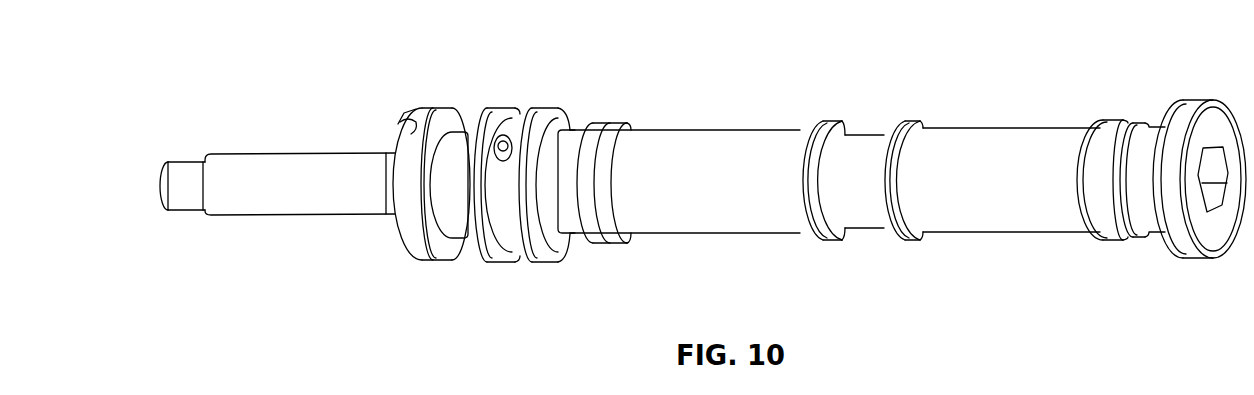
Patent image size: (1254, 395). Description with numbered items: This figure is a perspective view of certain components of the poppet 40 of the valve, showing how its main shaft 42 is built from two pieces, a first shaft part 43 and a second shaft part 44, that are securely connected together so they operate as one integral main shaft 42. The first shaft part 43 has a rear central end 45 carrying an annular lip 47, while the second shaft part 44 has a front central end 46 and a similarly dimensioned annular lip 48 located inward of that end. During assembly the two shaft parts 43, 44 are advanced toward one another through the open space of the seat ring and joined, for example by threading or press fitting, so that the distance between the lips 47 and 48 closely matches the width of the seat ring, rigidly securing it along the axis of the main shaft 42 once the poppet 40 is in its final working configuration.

The poppet 40 is at (266, 104).
The main shaft 42 is at (636, 95).
The first shaft part 43 is at (413, 232).
The second shaft part 44 is at (1015, 163).
The rear central end 45 is at (784, 122).
The front central end 46 is at (866, 122).
The annular lip 47 is at (823, 240).
The annular lip 48 is at (905, 240).